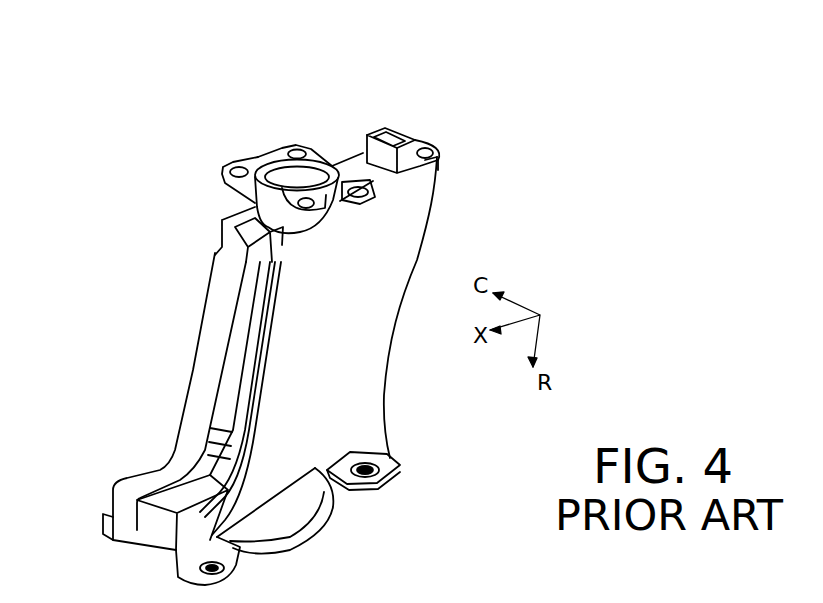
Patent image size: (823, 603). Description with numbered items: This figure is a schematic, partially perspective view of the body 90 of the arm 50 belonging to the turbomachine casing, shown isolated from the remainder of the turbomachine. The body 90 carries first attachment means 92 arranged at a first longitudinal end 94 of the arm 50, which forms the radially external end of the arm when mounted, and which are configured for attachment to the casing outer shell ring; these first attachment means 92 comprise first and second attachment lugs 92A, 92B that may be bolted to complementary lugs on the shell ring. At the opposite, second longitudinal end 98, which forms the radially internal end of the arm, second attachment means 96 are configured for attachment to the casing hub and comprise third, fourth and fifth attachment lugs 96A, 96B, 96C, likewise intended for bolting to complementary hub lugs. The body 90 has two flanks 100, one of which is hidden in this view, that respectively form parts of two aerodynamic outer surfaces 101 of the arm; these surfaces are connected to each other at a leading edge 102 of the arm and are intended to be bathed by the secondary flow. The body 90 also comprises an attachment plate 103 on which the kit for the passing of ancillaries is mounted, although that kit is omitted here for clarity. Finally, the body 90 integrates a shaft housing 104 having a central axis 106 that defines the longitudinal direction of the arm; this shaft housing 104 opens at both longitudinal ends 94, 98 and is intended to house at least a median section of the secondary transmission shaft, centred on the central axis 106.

The arm 50 is at (118, 299).
The body 90 is at (343, 307).
The first attachment means 92 is at (462, 515).
The first attachment lug 92A is at (385, 478).
The second attachment lug 92B is at (233, 573).
The first longitudinal end 94 is at (402, 468).
The second attachment means 96 is at (408, 60).
The third attachment lug 96A is at (391, 132).
The fourth attachment lug 96B is at (303, 148).
The fifth attachment lug 96C is at (232, 160).
The second longitudinal end 98 is at (430, 145).
The flank 100 is at (390, 253).
The aerodynamic outer surface 101 is at (436, 307).
The leading edge 102 is at (390, 357).
The attachment plate 103 is at (203, 377).
The shaft housing 104 is at (286, 179).
The central axis 106 is at (306, 148).